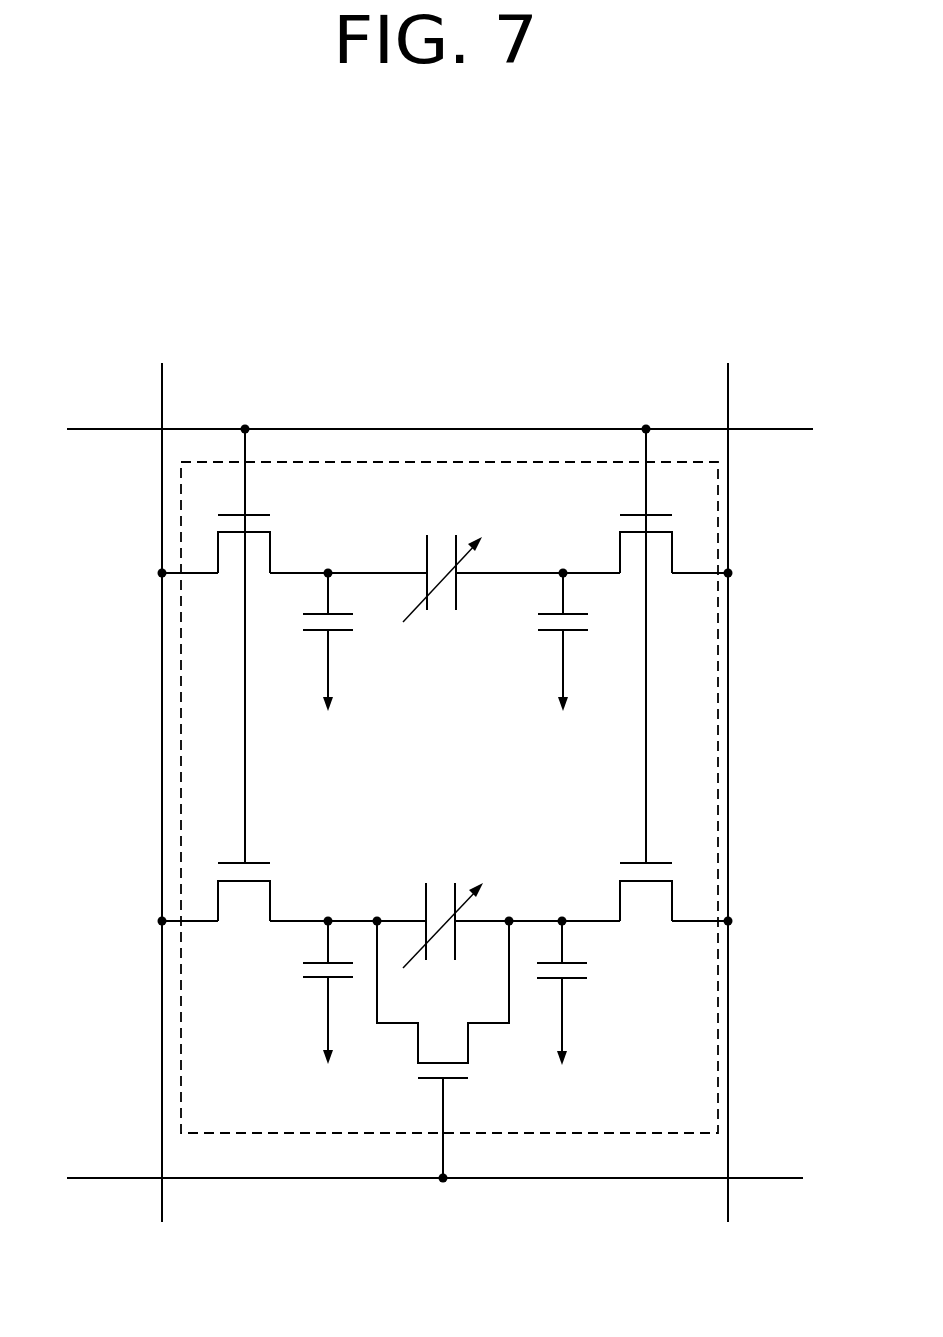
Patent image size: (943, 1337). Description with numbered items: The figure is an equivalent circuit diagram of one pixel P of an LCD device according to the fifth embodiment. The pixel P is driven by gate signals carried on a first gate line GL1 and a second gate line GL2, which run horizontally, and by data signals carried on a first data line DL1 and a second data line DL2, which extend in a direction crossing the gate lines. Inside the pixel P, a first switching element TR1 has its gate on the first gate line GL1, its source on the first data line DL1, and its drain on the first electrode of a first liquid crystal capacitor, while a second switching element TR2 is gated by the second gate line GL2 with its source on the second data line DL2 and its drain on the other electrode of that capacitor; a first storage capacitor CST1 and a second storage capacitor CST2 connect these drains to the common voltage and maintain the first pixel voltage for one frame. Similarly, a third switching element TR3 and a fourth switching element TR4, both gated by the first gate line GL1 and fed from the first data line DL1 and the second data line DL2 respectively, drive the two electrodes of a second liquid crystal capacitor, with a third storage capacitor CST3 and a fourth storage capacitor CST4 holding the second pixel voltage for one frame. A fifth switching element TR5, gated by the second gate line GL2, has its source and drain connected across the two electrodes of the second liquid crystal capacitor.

The pixel P is at (443, 462).
The first gate line GL1 is at (100, 428).
The second gate line GL2 is at (100, 1177).
The first data line DL1 is at (162, 689).
The second data line DL2 is at (728, 693).
The first switching element TR1 is at (228, 567).
The second switching element TR2 is at (664, 567).
The third switching element TR3 is at (273, 883).
The fourth switching element TR4 is at (616, 885).
The fifth switching element TR5 is at (443, 1049).
The first storage capacitor CST1 is at (355, 674).
The second storage capacitor CST2 is at (541, 674).
The third storage capacitor CST3 is at (296, 1020).
The fourth storage capacitor CST4 is at (599, 1020).